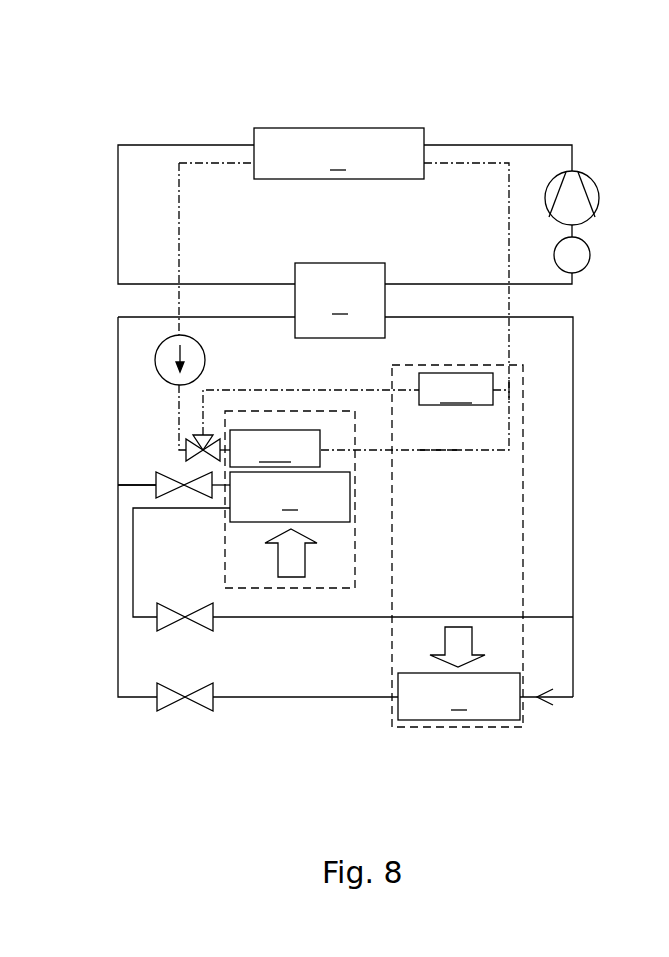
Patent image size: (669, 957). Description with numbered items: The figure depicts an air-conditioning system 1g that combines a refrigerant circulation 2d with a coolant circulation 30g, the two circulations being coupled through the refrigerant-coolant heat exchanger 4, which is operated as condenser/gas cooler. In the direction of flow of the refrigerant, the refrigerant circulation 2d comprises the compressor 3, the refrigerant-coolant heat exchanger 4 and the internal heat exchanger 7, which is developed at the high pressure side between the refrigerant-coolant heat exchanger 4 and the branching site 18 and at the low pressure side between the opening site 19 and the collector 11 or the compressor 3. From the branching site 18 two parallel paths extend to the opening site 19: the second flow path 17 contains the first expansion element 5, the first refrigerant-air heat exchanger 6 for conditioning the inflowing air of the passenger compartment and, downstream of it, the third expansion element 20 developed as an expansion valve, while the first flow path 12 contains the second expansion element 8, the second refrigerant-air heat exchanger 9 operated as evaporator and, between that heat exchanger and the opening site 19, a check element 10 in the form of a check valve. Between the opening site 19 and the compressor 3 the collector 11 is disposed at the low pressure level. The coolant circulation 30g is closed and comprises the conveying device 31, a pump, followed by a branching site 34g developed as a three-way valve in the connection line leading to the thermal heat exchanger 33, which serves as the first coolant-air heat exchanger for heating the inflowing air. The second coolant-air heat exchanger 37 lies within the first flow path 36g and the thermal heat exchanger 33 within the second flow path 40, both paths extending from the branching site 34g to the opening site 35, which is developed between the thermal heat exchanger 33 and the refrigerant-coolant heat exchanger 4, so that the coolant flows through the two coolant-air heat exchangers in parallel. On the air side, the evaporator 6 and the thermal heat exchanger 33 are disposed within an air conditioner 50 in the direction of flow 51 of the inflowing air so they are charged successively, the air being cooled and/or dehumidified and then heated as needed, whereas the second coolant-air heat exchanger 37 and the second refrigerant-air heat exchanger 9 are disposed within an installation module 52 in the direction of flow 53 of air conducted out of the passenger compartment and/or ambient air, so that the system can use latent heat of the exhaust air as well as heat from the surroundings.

The air-conditioning system 1g is at (540, 120).
The refrigerant circulation 2d is at (112, 260).
The compressor 3 is at (567, 188).
The refrigerant-coolant heat exchanger 4 is at (339, 153).
The internal heat exchanger 7 is at (340, 300).
The collector 11 is at (578, 258).
The coolant circulation 30g is at (192, 258).
The conveying device 31 is at (194, 358).
The thermal heat exchanger 33 is at (275, 448).
The branching site 34g is at (200, 445).
The first flow path 36g is at (258, 390).
The second coolant-air heat exchanger 37 is at (456, 389).
The opening site 35 is at (510, 390).
The second flow path 40 is at (438, 452).
The branching site 18 is at (167, 484).
The first expansion element 5 is at (168, 488).
The first refrigerant-air heat exchanger 6 is at (290, 497).
The air conditioner 50 is at (312, 410).
The direction of flow 51 is at (300, 572).
The second flow path 17 is at (267, 620).
The third expansion element 20 is at (185, 617).
The opening site 19 is at (573, 617).
The second refrigerant-air heat exchanger 9 is at (459, 696).
The installation module 52 is at (505, 730).
The direction of flow 53 is at (463, 647).
The check element 10 is at (543, 702).
The first flow path 12 is at (283, 697).
The second expansion element 8 is at (177, 697).